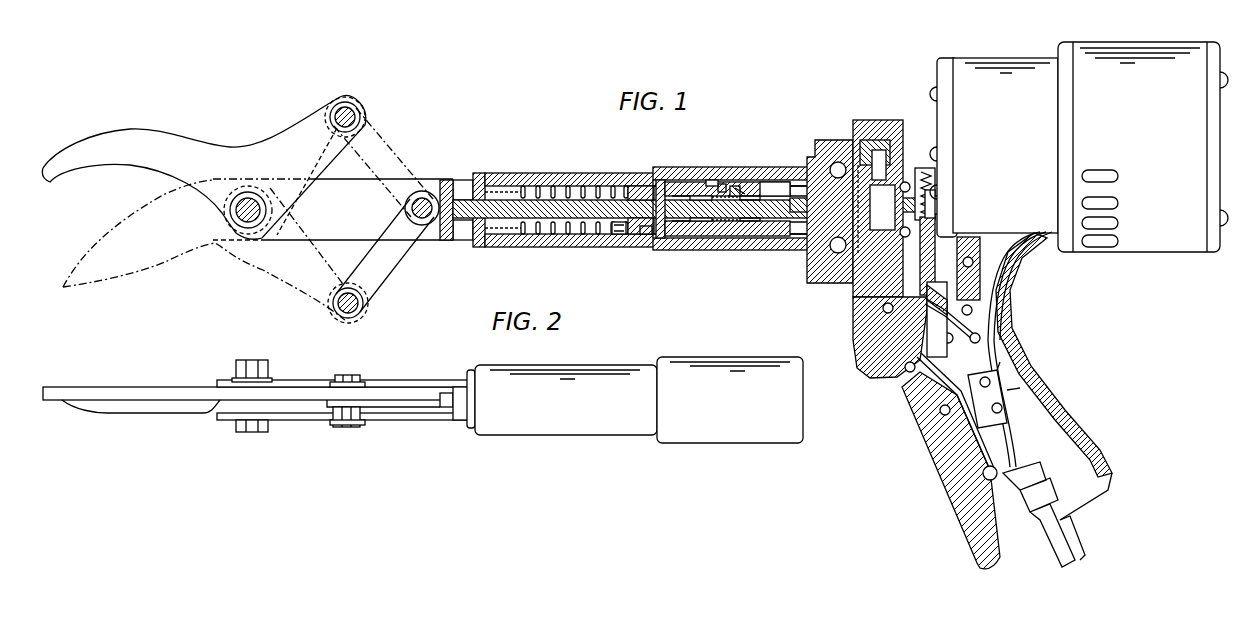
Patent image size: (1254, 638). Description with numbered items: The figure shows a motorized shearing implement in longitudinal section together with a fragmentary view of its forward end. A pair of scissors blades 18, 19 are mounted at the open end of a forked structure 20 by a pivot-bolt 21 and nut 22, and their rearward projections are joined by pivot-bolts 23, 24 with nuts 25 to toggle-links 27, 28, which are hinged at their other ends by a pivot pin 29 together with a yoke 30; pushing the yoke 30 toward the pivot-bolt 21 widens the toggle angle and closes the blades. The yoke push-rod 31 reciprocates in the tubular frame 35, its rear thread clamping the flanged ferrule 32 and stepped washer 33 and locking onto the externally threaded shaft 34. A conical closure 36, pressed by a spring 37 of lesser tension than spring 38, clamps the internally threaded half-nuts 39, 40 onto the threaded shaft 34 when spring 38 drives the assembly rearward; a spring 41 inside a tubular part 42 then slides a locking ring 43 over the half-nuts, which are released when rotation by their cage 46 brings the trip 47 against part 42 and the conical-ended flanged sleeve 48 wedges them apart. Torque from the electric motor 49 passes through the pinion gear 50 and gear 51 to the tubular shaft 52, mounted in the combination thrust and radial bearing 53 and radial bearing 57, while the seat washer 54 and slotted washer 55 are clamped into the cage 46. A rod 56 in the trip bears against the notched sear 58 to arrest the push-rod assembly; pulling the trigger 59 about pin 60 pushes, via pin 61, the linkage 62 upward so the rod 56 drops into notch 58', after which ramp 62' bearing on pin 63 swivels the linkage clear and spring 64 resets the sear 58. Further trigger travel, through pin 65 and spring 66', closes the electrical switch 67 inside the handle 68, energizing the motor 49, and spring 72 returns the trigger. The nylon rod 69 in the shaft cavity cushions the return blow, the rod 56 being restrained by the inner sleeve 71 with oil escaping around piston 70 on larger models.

In FIG. 1, the scissors blade 18 is at (196, 149).
In FIG. 2, the scissors blade 18 is at (150, 386).
In FIG. 1, the scissors blade 19 is at (213, 250).
In FIG. 2, the scissors blade 19 is at (165, 415).
In FIG. 1, the forked structure 20 is at (458, 186).
In FIG. 2, the forked structure 20 is at (445, 384).
In FIG. 1, the pivot-bolt 21 is at (249, 199).
In FIG. 2, the pivot-bolt 21 is at (251, 432).
In FIG. 2, the nut 22 is at (236, 380).
In FIG. 1, the pivot-bolt 23 is at (358, 116).
In FIG. 2, the pivot-bolt 23 is at (343, 378).
In FIG. 1, the pivot-bolt 24 is at (362, 305).
In FIG. 2, the pivot-bolt 24 is at (338, 428).
In FIG. 2, the nuts 25 is at (361, 383).
In FIG. 1, the toggle-link 27 is at (392, 158).
In FIG. 2, the toggle-link 27 is at (385, 410).
In FIG. 1, the toggle-link 28 is at (384, 279).
In FIG. 2, the toggle-link 28 is at (400, 398).
In FIG. 1, the pivot pin 29 is at (426, 197).
In FIG. 1, the yoke 30 is at (436, 243).
In FIG. 2, the yoke 30 is at (448, 410).
In FIG. 1, the yoke push-rod 31 is at (524, 200).
In FIG. 1, the flanged ferrule 32 is at (640, 186).
In FIG. 1, the stepped washer 33 is at (621, 248).
In FIG. 1, the externally threaded shaft 34 is at (808, 258).
In FIG. 1, the tubular frame 35 is at (572, 185).
In FIG. 2, the tubular frame 35 is at (607, 368).
In FIG. 1, the conical closure 36 is at (667, 174).
In FIG. 1, the spring 37 is at (650, 252).
In FIG. 1, the spring 38 is at (548, 238).
In FIG. 1, the half-nut 39 is at (702, 181).
In FIG. 1, the half-nut 40 is at (700, 250).
In FIG. 1, the spring 41 is at (781, 226).
In FIG. 1, the tubular part 42 is at (770, 194).
In FIG. 1, the locking ring 43 is at (680, 240).
In FIG. 1, the half-nuts cage 46 is at (738, 194).
In FIG. 1, the trip 47 is at (858, 168).
In FIG. 1, the conical-ended flanged sleeve 48 is at (720, 240).
In FIG. 1, the electric motor 49 is at (990, 85).
In FIG. 1, the pinion gear 50 is at (886, 136).
In FIG. 1, the gear 51 is at (862, 140).
In FIG. 1, the tubular shaft 52 is at (812, 160).
In FIG. 1, the combination thrust and radial bearing 53 is at (834, 161).
In FIG. 1, the half-nuts radial-support seat washer 54 is at (748, 240).
In FIG. 1, the half-nuts circumferential-support washer 55 is at (724, 190).
In FIG. 1, the rod 56 is at (797, 249).
In FIG. 1, the radial bearing 57 is at (925, 168).
In FIG. 1, the notched sear 58 is at (956, 231).
In FIG. 1, the notch 58' is at (966, 210).
In FIG. 1, the trigger 59 is at (868, 375).
In FIG. 1, the pin 60 is at (883, 310).
In FIG. 1, the pin 61 is at (930, 326).
In FIG. 1, the linkage 62 is at (949, 310).
In FIG. 1, the ramp 62' is at (953, 331).
In FIG. 1, the pin 63 is at (905, 365).
In FIG. 1, the spring 64 is at (935, 184).
In FIG. 1, the pin 65 is at (913, 386).
In FIG. 1, the trigger pivot 66' is at (912, 417).
In FIG. 1, the electrical switch 67 is at (995, 421).
In FIG. 1, the handle 68 is at (928, 438).
In FIG. 1, the nylon rod 69 is at (713, 182).
In FIG. 1, the piston 70 is at (741, 189).
In FIG. 1, the inner sleeve 71 is at (876, 150).
In FIG. 1, the spring 72 is at (1001, 331).